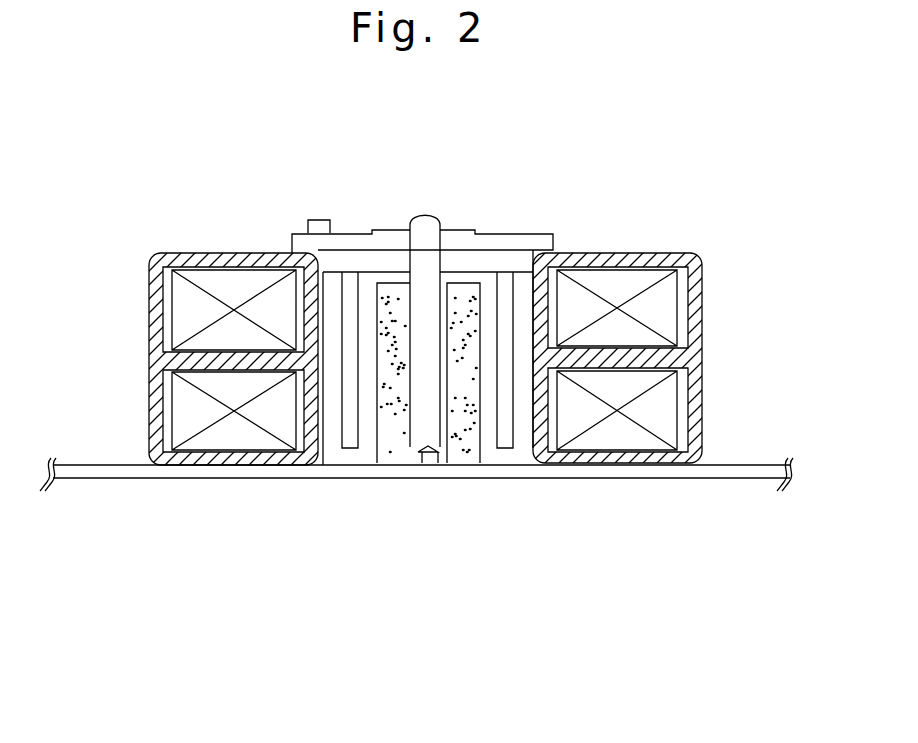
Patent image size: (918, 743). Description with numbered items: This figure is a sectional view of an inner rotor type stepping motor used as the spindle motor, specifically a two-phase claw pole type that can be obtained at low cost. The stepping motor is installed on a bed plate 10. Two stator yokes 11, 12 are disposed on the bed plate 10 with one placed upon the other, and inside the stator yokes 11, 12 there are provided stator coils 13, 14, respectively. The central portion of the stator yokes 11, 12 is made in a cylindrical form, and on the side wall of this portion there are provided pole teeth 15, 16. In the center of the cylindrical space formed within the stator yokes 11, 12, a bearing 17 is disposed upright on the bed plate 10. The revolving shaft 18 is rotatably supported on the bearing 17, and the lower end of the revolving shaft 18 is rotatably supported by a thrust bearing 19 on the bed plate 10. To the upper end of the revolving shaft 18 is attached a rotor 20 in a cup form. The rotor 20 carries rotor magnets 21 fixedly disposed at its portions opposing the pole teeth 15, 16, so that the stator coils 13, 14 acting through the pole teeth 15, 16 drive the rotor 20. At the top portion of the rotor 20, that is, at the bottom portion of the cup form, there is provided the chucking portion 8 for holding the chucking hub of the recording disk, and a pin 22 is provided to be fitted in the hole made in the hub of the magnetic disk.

The chucking portion 8 is at (389, 243).
The bed plate 10 is at (745, 479).
The stator yoke 11 is at (699, 413).
The stator yoke 12 is at (699, 315).
The stator coil 13 is at (216, 450).
The stator coil 14 is at (658, 284).
The pole teeth 15 is at (301, 442).
The pole teeth 16 is at (589, 252).
The bearing 17 is at (393, 458).
The revolving shaft 18 is at (430, 235).
The thrust bearing 19 is at (428, 465).
The rotor 20 is at (503, 288).
The rotor magnets 21 is at (325, 293).
The pin 22 is at (322, 230).